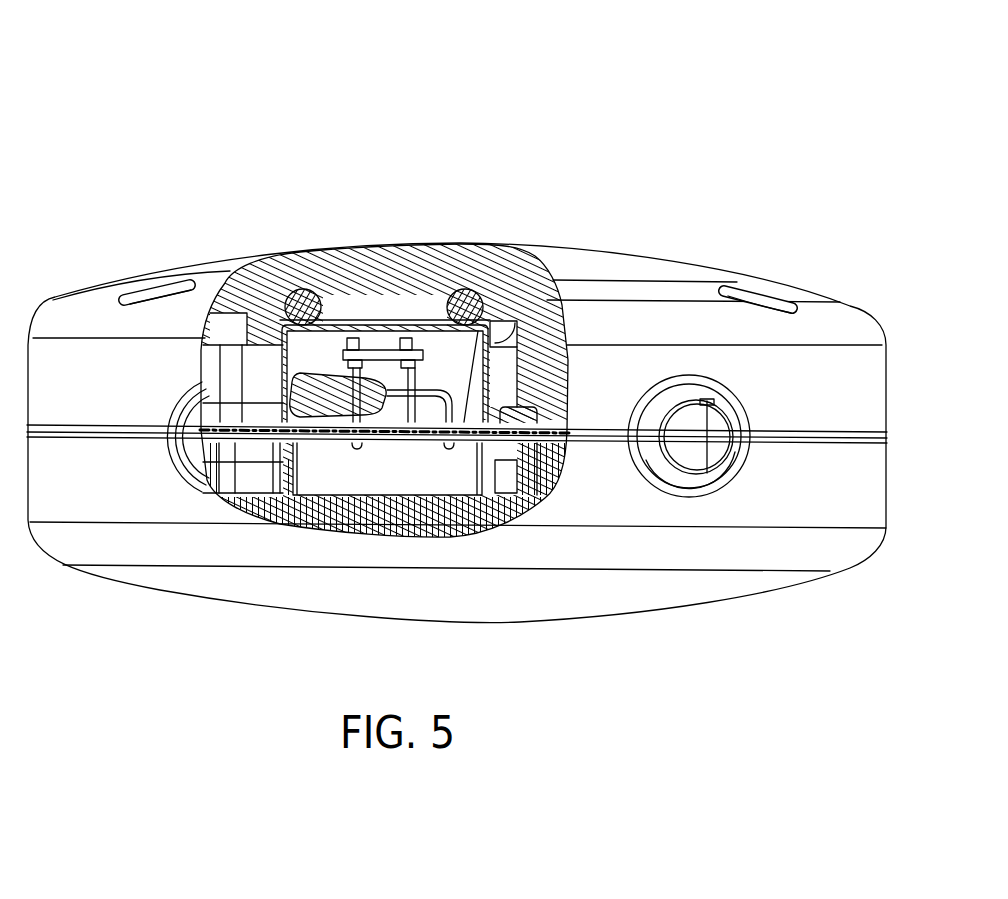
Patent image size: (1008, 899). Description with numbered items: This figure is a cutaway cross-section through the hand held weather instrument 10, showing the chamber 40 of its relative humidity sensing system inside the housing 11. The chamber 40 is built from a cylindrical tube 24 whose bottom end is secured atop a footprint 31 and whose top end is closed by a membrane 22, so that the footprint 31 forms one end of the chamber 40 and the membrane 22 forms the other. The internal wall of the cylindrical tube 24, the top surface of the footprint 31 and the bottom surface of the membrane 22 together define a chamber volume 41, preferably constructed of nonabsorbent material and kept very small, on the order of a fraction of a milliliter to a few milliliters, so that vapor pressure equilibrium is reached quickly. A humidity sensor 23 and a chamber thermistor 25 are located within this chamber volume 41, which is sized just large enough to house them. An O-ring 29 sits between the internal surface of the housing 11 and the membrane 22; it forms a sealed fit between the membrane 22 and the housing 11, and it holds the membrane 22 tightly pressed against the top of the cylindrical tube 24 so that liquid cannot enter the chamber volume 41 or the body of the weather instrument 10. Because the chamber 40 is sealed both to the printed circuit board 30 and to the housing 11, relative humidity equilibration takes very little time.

The weather instrument 10 is at (593, 132).
The housing 11 is at (787, 288).
The membrane 22 is at (421, 322).
The humidity sensor 23 is at (380, 349).
The cylindrical tube 24 is at (506, 365).
The chamber thermistor 25 is at (296, 384).
The O-ring 29 is at (303, 289).
The printed circuit board 30 is at (249, 426).
The footprint 31 is at (496, 366).
The chamber 40 is at (513, 363).
The chamber volume 41 is at (447, 373).